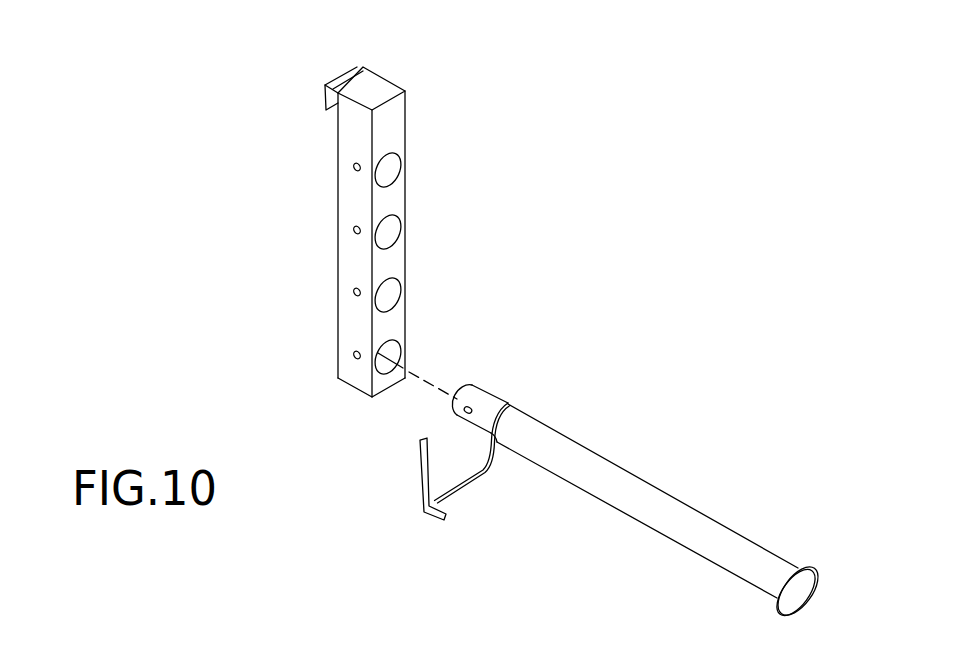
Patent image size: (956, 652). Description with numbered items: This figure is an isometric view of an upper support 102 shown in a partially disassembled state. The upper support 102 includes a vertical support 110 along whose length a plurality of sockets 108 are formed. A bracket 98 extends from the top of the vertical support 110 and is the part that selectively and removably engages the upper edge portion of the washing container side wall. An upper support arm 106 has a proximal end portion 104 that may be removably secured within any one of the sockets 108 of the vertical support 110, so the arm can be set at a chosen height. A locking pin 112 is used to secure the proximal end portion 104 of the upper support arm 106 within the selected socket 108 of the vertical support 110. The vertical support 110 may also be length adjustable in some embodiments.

The bracket 98 is at (342, 82).
The upper support 102 is at (633, 183).
The proximal end portion 104 is at (517, 375).
The upper support arm 106 is at (622, 483).
The socket 108 is at (394, 346).
The vertical support 110 is at (406, 195).
The locking pin 112 is at (423, 468).